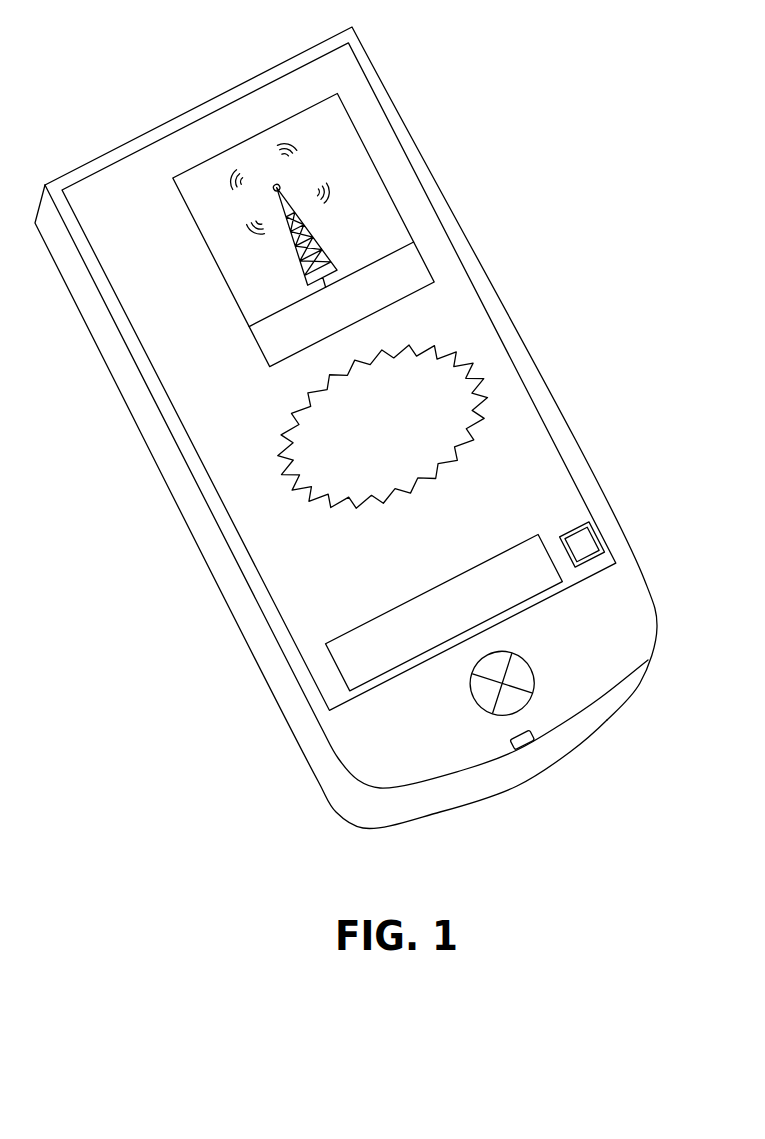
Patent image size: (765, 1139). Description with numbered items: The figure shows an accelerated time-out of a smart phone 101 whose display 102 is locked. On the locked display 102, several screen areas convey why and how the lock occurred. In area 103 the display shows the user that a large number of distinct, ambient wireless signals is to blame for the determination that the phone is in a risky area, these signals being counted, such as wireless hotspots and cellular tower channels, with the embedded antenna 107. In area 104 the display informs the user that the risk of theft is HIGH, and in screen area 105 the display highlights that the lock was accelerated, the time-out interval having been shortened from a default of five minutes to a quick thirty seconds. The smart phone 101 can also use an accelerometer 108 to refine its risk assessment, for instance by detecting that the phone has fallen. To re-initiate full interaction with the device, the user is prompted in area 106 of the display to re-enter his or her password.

The smart phone 101 is at (378, 66).
The display 102 is at (393, 118).
The area 103 is at (335, 195).
The area 104 is at (410, 270).
The screen area 105 is at (477, 383).
The area 106 is at (548, 600).
The embedded antenna 107 is at (287, 692).
The accelerometer 108 is at (540, 746).